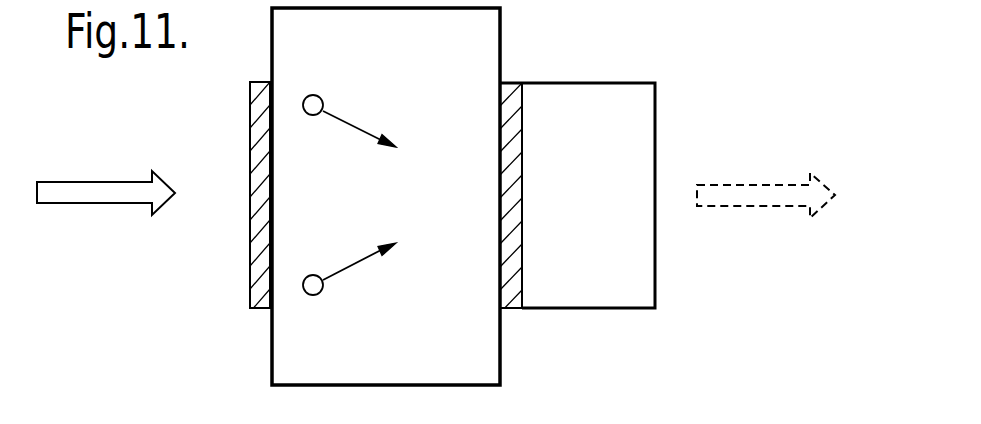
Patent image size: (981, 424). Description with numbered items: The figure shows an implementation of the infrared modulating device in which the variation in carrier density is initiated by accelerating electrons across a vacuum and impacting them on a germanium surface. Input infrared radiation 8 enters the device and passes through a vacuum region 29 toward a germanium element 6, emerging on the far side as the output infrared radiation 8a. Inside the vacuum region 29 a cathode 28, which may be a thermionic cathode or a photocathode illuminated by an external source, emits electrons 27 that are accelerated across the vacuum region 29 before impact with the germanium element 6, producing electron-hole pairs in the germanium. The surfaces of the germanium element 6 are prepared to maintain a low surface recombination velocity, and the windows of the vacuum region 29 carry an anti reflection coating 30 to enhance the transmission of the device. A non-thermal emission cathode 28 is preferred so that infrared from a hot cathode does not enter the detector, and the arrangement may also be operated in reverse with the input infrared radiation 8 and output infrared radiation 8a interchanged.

The germanium element 6 is at (655, 282).
The input infrared radiation 8 is at (88, 186).
The output infrared radiation 8a is at (742, 195).
The electrons 27 is at (354, 120).
The cathode 28 is at (321, 96).
The vacuum region 29 is at (455, 350).
The anti reflection coating 30 is at (250, 128).